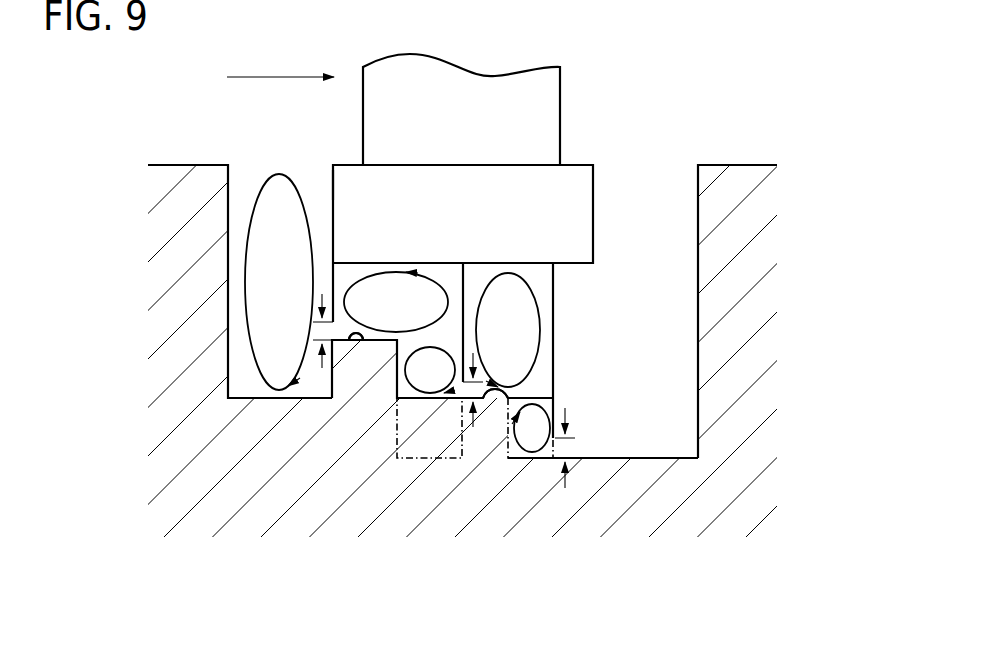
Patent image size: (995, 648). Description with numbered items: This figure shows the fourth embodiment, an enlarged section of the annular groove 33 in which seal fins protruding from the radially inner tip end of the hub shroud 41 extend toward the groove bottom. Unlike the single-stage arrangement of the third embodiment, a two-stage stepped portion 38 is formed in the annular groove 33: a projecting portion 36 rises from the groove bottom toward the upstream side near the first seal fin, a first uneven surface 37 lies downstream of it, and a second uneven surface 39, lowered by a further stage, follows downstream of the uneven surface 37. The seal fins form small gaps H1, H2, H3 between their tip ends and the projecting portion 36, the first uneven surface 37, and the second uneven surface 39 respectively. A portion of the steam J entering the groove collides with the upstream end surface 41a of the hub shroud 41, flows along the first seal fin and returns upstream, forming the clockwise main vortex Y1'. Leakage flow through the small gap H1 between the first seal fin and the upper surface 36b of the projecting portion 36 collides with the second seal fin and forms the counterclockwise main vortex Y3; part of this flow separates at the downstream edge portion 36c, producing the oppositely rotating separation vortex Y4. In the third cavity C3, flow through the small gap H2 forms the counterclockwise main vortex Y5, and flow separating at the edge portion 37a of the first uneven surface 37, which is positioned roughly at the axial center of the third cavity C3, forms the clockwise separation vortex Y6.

The annular groove 33 is at (697, 220).
The hub shroud 41 is at (347, 165).
The end surface 41a is at (333, 185).
The steam J is at (248, 77).
The main vortex Y1' is at (202, 282).
The main vortex Y3 is at (372, 276).
The separation vortex Y4 is at (416, 394).
The main vortex Y5 is at (540, 328).
The separation vortex Y6 is at (533, 453).
The third cavity C3 is at (539, 292).
The projecting portion 36 is at (397, 443).
The upper surface 36b is at (356, 333).
The edge portion 36c is at (336, 341).
The first uneven surface 37 is at (492, 396).
The edge portion 37a is at (510, 391).
The two-stage stepped portion 38 is at (532, 387).
The second uneven surface 39 is at (623, 458).
The small gap H1 is at (322, 350).
The small gap H2 is at (463, 400).
The small gap H3 is at (566, 451).